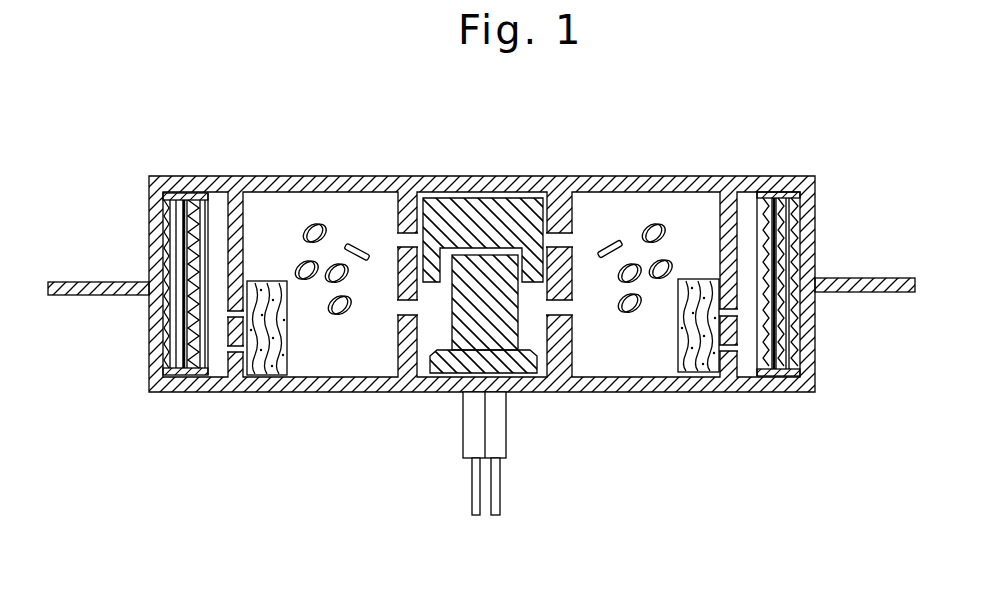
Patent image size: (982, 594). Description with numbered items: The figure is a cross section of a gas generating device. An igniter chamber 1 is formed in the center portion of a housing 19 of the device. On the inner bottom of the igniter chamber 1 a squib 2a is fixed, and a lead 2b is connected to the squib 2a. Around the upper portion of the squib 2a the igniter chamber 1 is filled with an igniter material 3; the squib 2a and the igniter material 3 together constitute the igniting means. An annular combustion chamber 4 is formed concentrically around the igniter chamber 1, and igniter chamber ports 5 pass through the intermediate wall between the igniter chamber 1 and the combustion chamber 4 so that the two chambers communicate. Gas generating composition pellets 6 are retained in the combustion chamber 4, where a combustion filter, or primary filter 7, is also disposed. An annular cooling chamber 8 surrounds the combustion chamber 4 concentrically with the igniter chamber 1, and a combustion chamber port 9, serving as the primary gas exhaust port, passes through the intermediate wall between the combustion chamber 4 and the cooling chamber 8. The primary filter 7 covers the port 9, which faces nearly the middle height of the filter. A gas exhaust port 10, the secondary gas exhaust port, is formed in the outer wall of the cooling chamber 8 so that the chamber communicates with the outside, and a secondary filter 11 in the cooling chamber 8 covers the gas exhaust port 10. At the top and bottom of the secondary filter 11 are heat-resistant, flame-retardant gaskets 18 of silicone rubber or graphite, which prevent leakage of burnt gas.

The igniter chamber 1 is at (412, 365).
The squib 2a is at (510, 302).
The lead 2b is at (473, 422).
The igniter material 3 is at (473, 205).
The combustion chamber 4 is at (270, 200).
The igniter chamber ports 5 is at (566, 313).
The gas generating composition pellets 6 is at (661, 262).
The combustion filter (primary filter) 7 is at (677, 363).
The cooling chamber 8 is at (220, 367).
The combustion chamber port (primary gas exhaust port) 9 is at (728, 314).
The gas exhaust port (secondary gas exhaust port) 10 is at (803, 208).
The secondary filter 11 is at (773, 258).
The gaskets 18 is at (177, 193).
The housing 19 is at (577, 184).